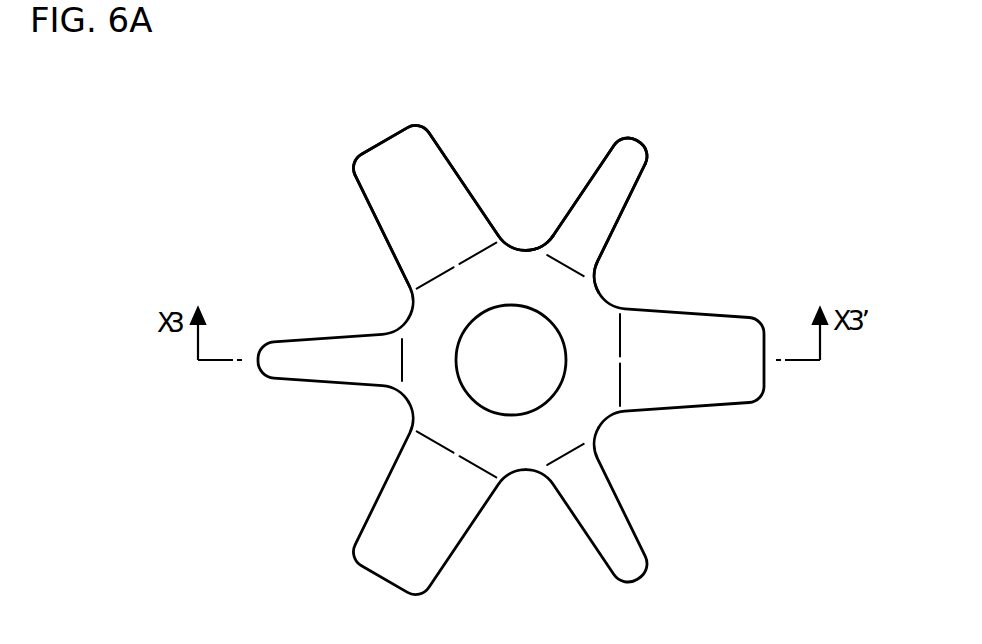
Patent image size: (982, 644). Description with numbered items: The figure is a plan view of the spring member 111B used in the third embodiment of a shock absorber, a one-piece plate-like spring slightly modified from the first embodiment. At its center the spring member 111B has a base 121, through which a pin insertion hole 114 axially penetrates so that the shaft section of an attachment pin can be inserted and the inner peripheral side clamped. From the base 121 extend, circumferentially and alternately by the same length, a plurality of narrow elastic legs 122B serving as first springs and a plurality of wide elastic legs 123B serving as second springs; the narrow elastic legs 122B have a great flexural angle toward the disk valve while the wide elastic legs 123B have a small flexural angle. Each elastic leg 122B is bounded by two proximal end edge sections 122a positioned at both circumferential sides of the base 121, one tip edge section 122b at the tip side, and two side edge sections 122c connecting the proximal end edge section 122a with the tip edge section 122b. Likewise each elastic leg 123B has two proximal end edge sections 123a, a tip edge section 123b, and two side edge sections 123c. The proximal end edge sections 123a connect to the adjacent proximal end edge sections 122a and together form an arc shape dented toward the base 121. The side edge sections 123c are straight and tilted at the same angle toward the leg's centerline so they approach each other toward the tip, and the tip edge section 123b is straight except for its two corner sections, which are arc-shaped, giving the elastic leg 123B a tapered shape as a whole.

The spring member 111B is at (545, 334).
The pin insertion hole 114 is at (479, 403).
The base 121 is at (580, 413).
The elastic leg (first spring) 122B is at (628, 168).
The proximal end edge section 122a is at (548, 232).
The tip edge section 122b is at (638, 138).
The side edge section 122c is at (589, 183).
The elastic leg (second spring) 123B is at (393, 176).
The proximal end edge section 123a is at (517, 246).
The tip edge section 123b is at (386, 138).
The side edge section 123c is at (462, 180).